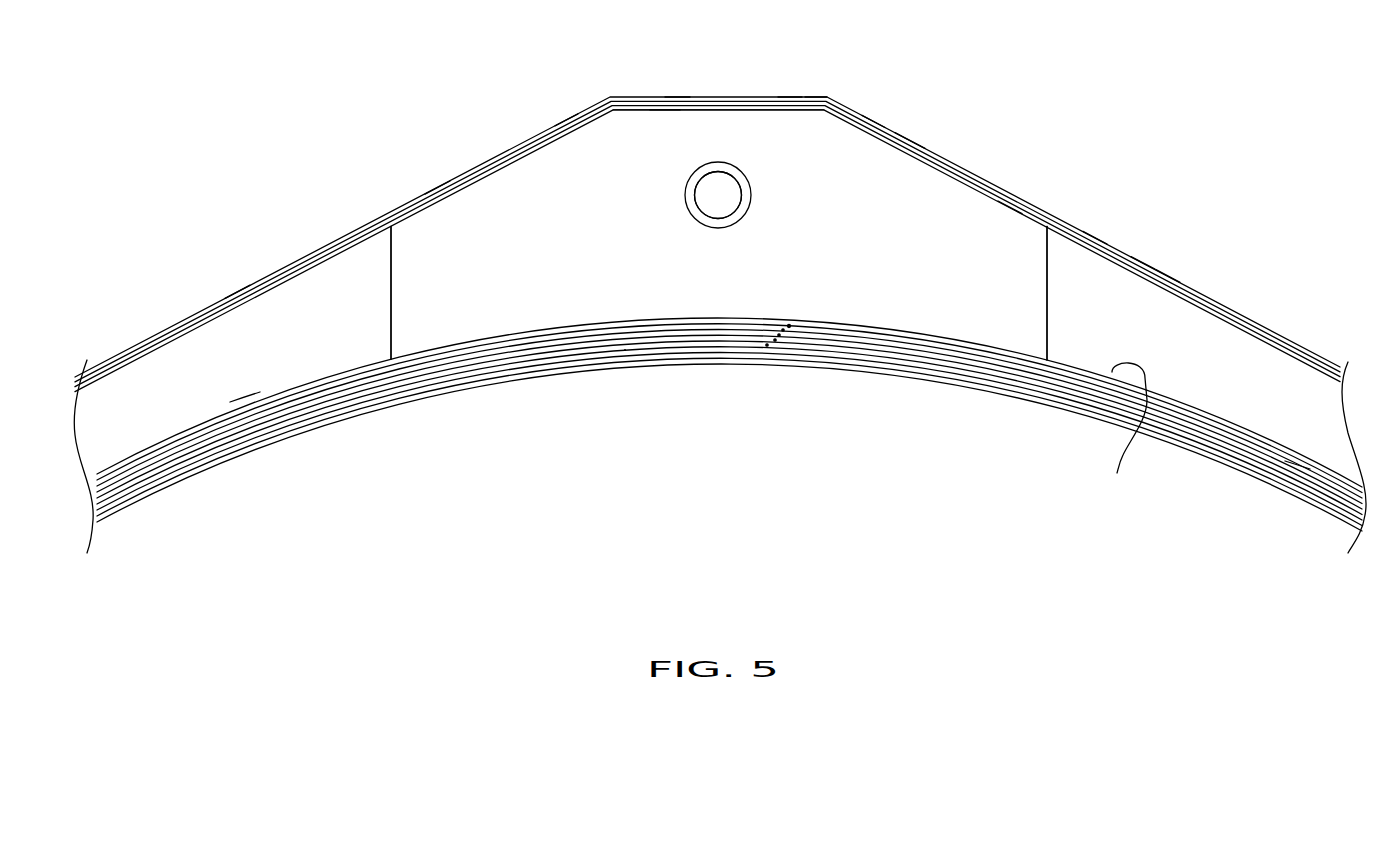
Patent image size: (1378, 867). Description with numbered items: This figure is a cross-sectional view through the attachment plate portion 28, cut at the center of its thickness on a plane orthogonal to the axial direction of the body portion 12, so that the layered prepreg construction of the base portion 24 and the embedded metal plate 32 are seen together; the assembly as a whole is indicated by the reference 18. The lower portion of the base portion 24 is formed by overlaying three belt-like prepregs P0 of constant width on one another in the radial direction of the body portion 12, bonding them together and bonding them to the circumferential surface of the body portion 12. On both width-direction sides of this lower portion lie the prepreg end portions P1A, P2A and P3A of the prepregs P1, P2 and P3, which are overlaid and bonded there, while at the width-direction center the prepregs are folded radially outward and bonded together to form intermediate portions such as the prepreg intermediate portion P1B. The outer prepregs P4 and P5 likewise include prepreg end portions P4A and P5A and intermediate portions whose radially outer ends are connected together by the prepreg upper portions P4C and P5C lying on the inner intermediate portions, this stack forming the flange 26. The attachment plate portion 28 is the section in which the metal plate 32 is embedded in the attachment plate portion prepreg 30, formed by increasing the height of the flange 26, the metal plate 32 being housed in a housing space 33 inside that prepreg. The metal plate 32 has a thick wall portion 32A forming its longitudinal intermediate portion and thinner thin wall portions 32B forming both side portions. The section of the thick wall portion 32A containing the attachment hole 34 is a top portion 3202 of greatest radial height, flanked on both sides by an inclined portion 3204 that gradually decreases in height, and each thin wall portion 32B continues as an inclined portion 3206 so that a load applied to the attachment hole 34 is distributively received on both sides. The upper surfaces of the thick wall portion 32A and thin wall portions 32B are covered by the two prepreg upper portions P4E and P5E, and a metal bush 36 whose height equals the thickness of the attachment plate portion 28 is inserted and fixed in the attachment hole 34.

The roof reinforcement member 18 is at (457, 108).
The body portion 12 is at (1187, 440).
The base portion 24 is at (1127, 432).
The flange 26 is at (237, 297).
The attachment plate portion 28 is at (677, 95).
The attachment plate portion prepreg 30 is at (910, 138).
The metal plate 32 is at (726, 368).
The thick wall portion 32A is at (740, 253).
The thin wall portion 32B is at (443, 293).
The housing space 33 is at (667, 108).
The attachment hole 34 is at (733, 215).
The metal bush 36 is at (730, 194).
The top portion 3202 is at (718, 108).
The inclined portion 3204 is at (566, 125).
The inclined portion 3206 is at (437, 190).
The belt-like prepreg P0 is at (625, 350).
The prepreg P1 is at (815, 440).
The prepreg end portion P1A is at (767, 345).
The prepreg P2 is at (833, 424).
The prepreg end portion P2A is at (775, 340).
The prepreg P3 is at (849, 407).
The prepreg end portion P3A is at (779, 335).
The prepreg P4 is at (865, 391).
The prepreg end portion P4A is at (783, 330).
The prepreg P5 is at (895, 376).
The prepreg end portion P5A is at (790, 326).
The prepreg intermediate portion P1B is at (248, 363).
The prepreg upper portion P4C is at (1168, 282).
The prepreg upper portion P5C is at (1143, 270).
The prepreg upper portion P4E is at (817, 97).
The prepreg upper portion P5E is at (790, 97).